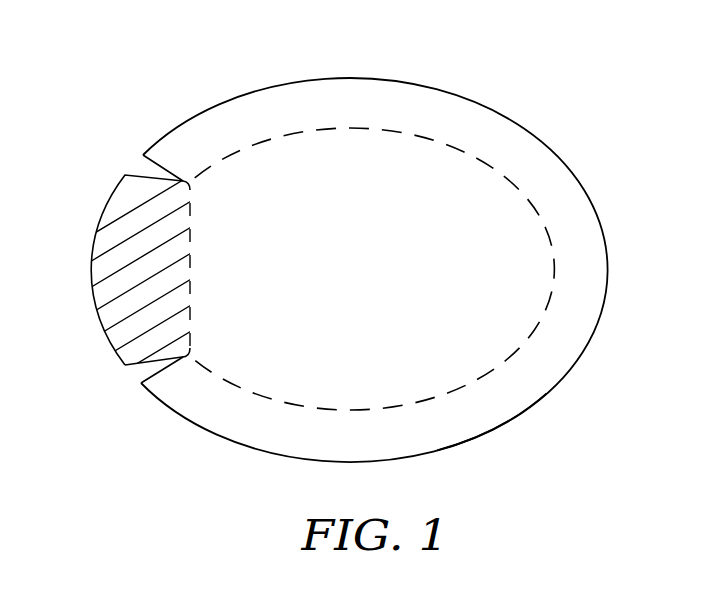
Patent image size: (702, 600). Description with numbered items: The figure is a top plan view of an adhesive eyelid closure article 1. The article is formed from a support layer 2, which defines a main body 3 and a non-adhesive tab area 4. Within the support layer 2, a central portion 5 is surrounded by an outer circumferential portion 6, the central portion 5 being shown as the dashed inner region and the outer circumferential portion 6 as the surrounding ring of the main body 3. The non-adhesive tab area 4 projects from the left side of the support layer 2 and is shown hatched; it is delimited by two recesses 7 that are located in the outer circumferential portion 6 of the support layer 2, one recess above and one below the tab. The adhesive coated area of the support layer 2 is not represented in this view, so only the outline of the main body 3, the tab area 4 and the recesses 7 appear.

The adhesive eyelid closure article 1 is at (174, 45).
The support layer 2 is at (532, 130).
The main body 3 is at (536, 418).
The non-adhesive tab area 4 is at (130, 248).
The central portion 5 is at (442, 250).
The outer circumferential portion 6 is at (368, 94).
The recesses 7 is at (138, 373).